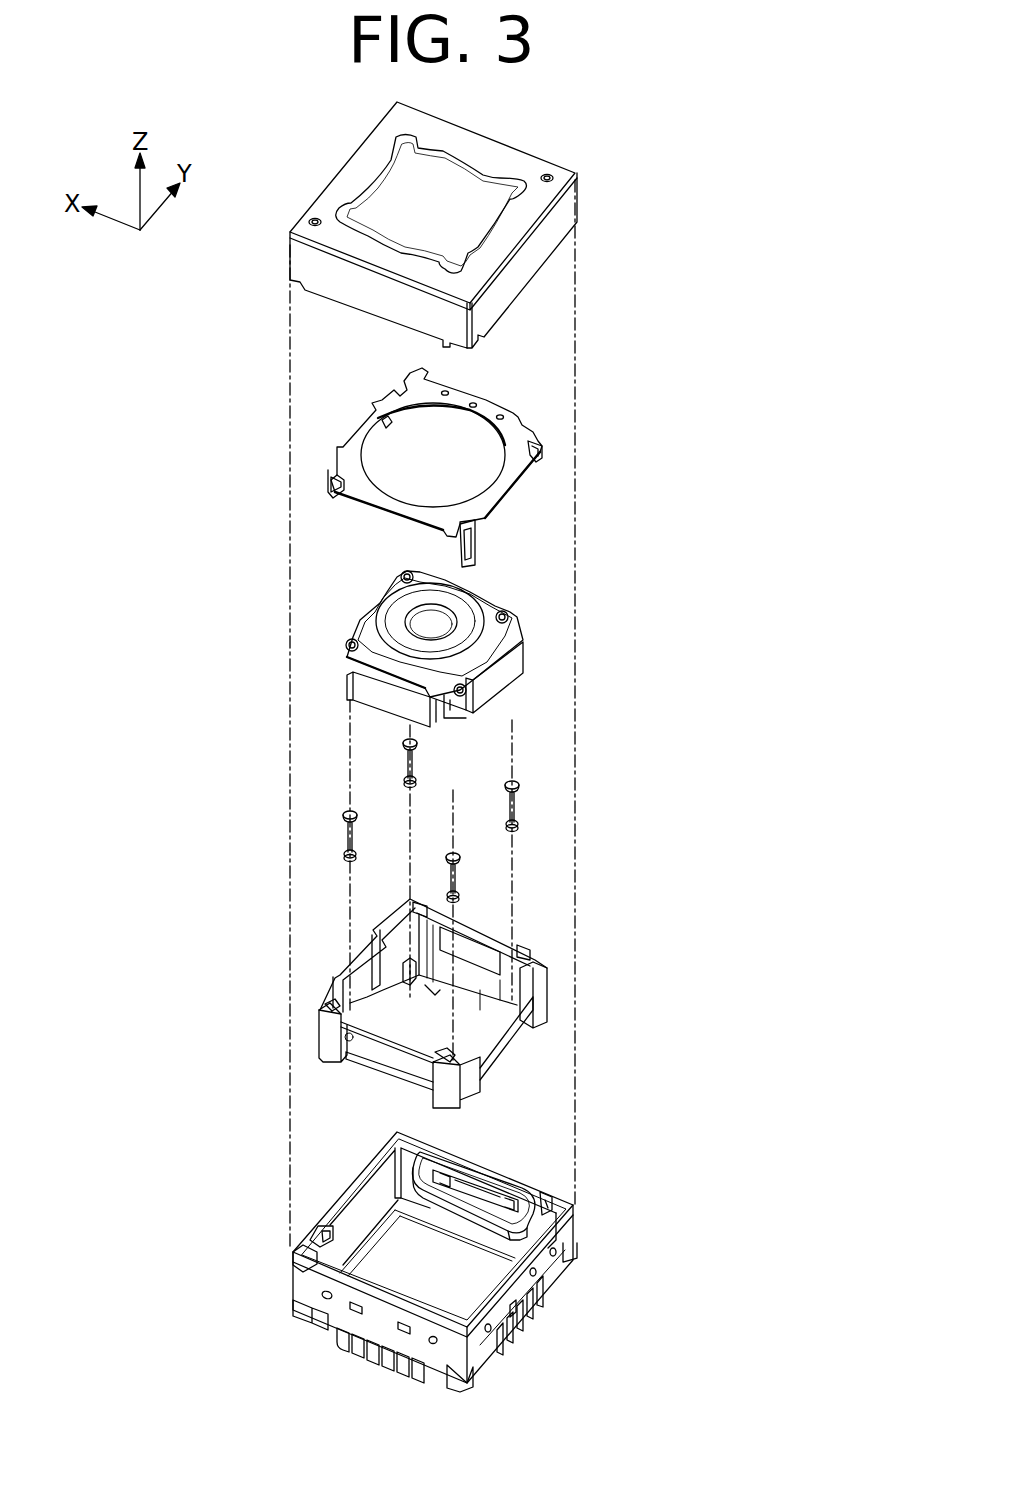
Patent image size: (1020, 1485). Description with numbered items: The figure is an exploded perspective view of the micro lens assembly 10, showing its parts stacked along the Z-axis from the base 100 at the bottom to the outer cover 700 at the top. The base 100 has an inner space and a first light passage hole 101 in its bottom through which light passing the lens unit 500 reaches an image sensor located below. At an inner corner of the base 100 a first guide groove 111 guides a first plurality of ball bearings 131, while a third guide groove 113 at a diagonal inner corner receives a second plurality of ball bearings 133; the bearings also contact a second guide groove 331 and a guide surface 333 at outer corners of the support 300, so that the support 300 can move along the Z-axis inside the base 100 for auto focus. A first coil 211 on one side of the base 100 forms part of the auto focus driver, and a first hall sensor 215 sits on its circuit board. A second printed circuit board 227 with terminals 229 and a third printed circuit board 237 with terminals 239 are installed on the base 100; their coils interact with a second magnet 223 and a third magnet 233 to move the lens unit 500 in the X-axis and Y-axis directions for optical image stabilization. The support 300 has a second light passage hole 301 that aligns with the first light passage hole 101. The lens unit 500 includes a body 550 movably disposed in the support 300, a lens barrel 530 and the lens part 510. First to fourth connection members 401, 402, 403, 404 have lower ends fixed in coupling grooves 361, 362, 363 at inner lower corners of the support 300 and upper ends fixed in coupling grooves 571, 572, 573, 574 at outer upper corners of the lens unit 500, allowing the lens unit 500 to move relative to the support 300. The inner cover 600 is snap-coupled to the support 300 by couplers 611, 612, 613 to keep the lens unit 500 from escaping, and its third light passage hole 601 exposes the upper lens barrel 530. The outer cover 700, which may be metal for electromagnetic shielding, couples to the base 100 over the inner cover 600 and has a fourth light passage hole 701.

The micro lens assembly 10 is at (243, 157).
The base 100 is at (445, 1245).
The first light passage hole 101 is at (452, 1245).
The first guide groove 111 is at (565, 1210).
The third guide groove 113 is at (310, 1238).
The first plurality of ball bearings 131 is at (537, 1188).
The second plurality of ball bearings 133 is at (315, 1266).
The first coil 211 is at (480, 1169).
The first hall sensor 215 is at (490, 1197).
The second magnet 223 is at (520, 662).
The second printed circuit board 227 is at (550, 1270).
The terminals 229 is at (530, 1300).
The third magnet 233 is at (360, 693).
The third printed circuit board 237 is at (300, 1310).
The terminals 239 is at (345, 1342).
The support 300 is at (444, 995).
The second light passage hole 301 is at (432, 990).
The second guide groove 331 is at (555, 962).
The guide surface 333 is at (320, 1006).
The first coupling groove 361 is at (335, 1062).
The second coupling groove 362 is at (388, 965).
The third coupling groove 363 is at (530, 1020).
The first connection member 401 is at (353, 832).
The second connection member 402 is at (407, 760).
The third connection member 403 is at (515, 803).
The fourth connection member 404 is at (456, 876).
The lens unit 500 is at (430, 624).
The lens part 510 is at (420, 615).
The lens barrel 530 is at (375, 622).
The body 550 is at (480, 588).
The fifth coupling groove 571 is at (346, 646).
The sixth coupling groove 572 is at (405, 572).
The seventh coupling groove 573 is at (510, 616).
The eighth coupling groove 574 is at (475, 700).
The inner cover 600 is at (437, 456).
The third light passage hole 601 is at (492, 472).
The coupler 611 is at (326, 490).
The coupler 612 is at (387, 418).
The coupler 613 is at (478, 543).
The outer cover 700 is at (484, 225).
The fourth light passage hole 701 is at (493, 232).